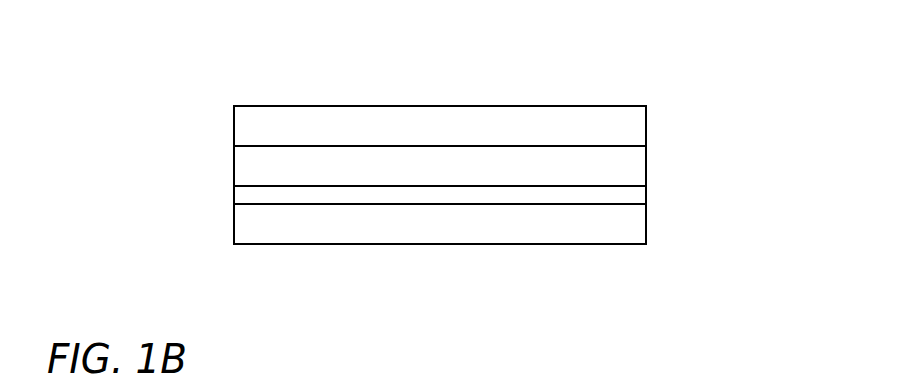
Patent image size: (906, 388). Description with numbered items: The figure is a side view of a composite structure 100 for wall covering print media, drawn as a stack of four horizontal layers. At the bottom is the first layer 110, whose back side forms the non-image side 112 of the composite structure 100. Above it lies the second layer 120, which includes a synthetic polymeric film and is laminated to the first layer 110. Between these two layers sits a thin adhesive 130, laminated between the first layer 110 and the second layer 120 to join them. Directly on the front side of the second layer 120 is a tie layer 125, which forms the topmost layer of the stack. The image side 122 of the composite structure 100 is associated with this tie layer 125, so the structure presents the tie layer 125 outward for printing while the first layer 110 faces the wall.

The composite structure 100 is at (675, 67).
The first layer 110 is at (646, 225).
The non-image side 112 is at (253, 255).
The second layer 120 is at (646, 166).
The image side 122 is at (253, 96).
The tie layer 125 is at (646, 127).
The adhesive 130 is at (234, 195).